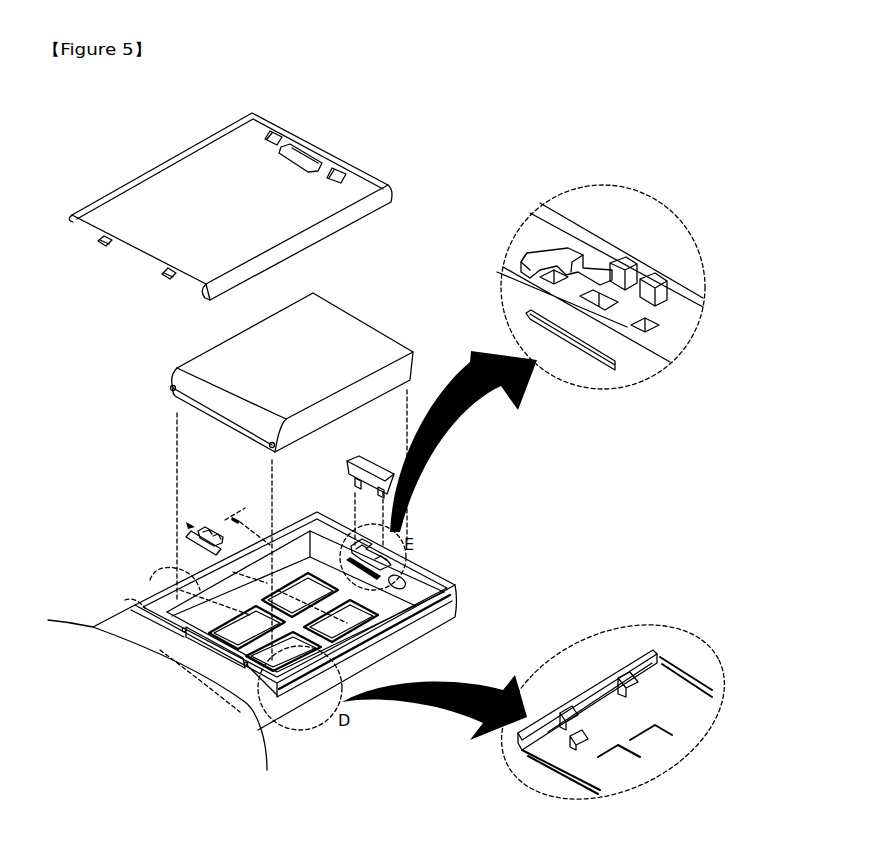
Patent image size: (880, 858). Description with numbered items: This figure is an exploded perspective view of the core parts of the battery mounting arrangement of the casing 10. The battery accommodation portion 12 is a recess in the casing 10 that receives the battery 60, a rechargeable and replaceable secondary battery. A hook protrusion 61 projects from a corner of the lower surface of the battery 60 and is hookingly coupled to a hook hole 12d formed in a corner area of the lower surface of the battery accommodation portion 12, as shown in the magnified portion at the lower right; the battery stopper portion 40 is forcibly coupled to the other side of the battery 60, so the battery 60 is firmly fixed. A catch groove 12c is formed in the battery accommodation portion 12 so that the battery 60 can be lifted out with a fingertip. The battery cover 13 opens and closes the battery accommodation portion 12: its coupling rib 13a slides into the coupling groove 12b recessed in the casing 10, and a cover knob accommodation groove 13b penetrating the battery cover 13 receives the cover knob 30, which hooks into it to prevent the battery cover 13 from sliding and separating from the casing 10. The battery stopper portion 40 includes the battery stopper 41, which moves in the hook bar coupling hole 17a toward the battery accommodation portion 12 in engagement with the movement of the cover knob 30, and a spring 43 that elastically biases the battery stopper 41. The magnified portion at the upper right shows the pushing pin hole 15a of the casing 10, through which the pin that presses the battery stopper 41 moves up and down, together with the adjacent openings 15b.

The casing 10 is at (436, 615).
The battery accommodation portion 12 is at (394, 628).
The coupling groove 12b is at (131, 600).
The catch groove 12c is at (408, 580).
The hook hole 12d is at (655, 642).
The battery cover 13 is at (255, 124).
The coupling rib 13a is at (98, 240).
The cover knob accommodation groove 13b is at (340, 161).
The pushing pin hole 15a is at (590, 302).
The terminal holes 15b is at (540, 278).
The hook bar coupling hole 17a is at (553, 333).
The cover knob 30 is at (347, 472).
The battery stopper portion 40 is at (186, 523).
The battery stopper 41 is at (186, 541).
The spring 43 is at (232, 516).
The battery 60 is at (347, 324).
The hook protrusion 61 is at (169, 389).